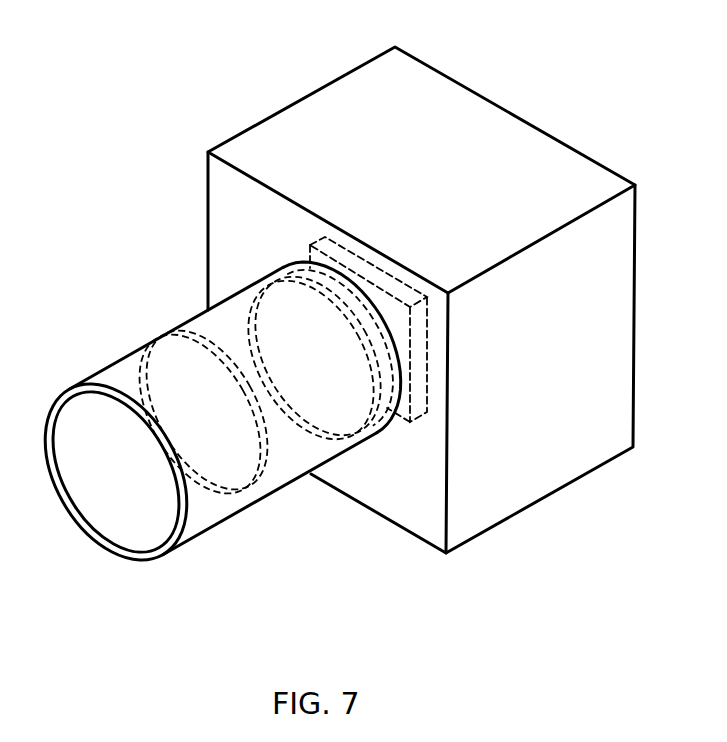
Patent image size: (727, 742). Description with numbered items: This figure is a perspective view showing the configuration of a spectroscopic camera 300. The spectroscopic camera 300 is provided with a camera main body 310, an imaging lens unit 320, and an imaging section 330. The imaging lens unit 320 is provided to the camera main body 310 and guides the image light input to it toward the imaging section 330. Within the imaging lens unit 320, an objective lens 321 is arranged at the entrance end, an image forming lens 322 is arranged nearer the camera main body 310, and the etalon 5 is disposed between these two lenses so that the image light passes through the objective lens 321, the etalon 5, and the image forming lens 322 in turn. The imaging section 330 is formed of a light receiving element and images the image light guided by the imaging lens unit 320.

The spectroscopic camera 300 is at (219, 68).
The camera main body 310 is at (533, 140).
The imaging lens unit 320 is at (120, 372).
The objective lens 321 is at (86, 498).
The image forming lens 322 is at (333, 424).
The imaging section 330 is at (432, 364).
The etalon 5 is at (237, 492).